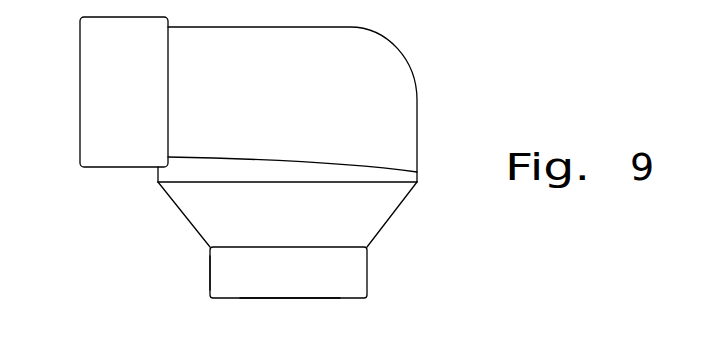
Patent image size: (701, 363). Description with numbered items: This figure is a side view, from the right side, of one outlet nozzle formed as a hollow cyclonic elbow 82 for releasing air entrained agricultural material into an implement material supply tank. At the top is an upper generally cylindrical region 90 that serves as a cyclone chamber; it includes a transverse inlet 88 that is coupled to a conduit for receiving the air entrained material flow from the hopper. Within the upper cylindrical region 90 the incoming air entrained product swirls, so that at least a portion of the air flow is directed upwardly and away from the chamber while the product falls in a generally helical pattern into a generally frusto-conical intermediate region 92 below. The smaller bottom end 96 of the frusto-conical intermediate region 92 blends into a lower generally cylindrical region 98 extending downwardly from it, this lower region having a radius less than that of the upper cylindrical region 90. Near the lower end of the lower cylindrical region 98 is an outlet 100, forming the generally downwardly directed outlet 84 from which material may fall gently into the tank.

The cyclonic elbow 82 is at (271, 184).
The downwardly directed outlet 84 is at (327, 280).
The transverse inlet 88 is at (90, 120).
The upper cylindrical region 90 is at (417, 123).
The frusto-conical intermediate region 92 is at (182, 213).
The smaller bottom end 96 is at (367, 247).
The lower cylindrical region 98 is at (222, 286).
The outlet 100 is at (295, 300).